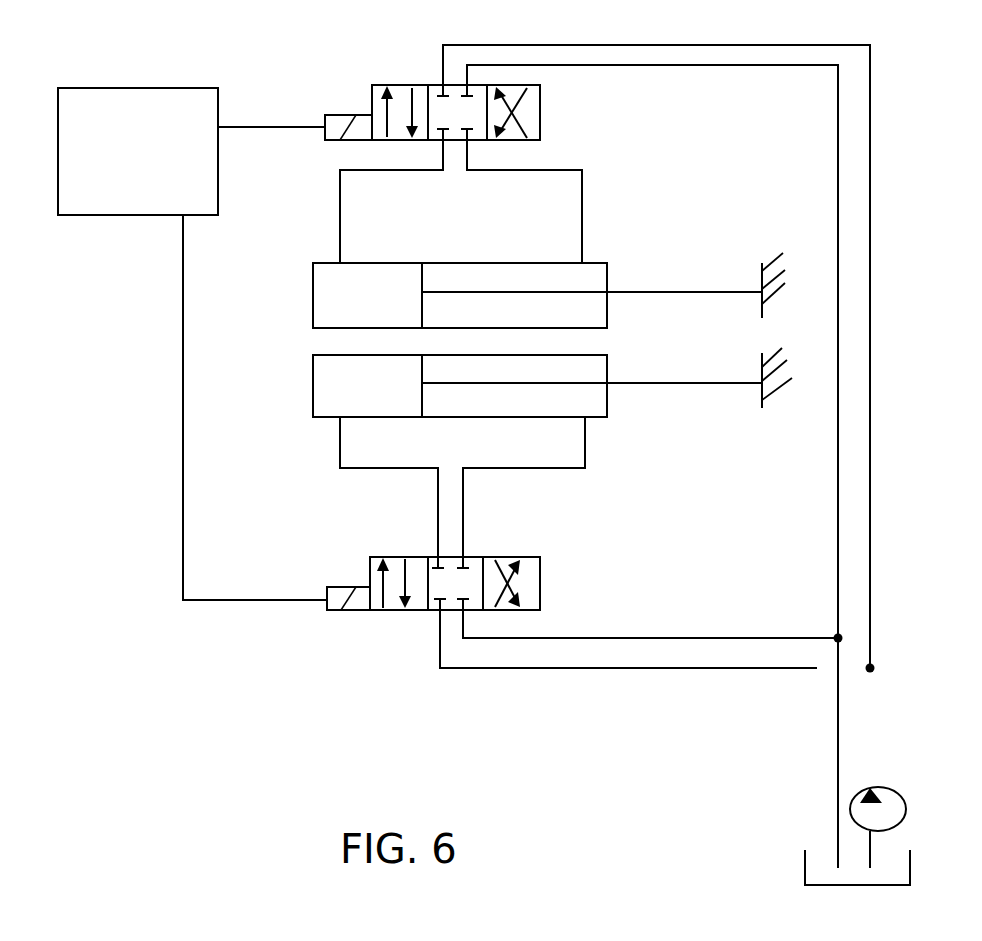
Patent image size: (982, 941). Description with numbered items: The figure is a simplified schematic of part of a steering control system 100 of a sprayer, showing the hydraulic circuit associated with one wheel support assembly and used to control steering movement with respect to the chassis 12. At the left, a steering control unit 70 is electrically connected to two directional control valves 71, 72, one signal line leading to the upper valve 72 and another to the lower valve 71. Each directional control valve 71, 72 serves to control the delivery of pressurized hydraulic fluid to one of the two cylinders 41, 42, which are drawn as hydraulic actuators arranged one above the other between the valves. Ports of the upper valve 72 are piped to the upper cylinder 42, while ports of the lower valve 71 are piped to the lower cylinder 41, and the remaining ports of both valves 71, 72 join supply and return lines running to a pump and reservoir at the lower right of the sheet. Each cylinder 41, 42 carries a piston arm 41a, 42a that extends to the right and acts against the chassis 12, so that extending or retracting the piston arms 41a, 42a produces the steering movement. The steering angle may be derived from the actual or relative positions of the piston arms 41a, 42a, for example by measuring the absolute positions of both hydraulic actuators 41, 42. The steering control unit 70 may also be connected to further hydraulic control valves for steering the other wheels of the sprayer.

The steering control system 100 is at (141, 654).
The steering control unit 70 is at (120, 217).
The directional control valve 72 is at (545, 112).
The directional control valve 71 is at (390, 612).
The cylinder 42 is at (608, 262).
The piston arm 42a is at (700, 291).
The cylinder 41 is at (606, 413).
The piston arm 41a is at (710, 384).
The chassis 12 is at (781, 257).